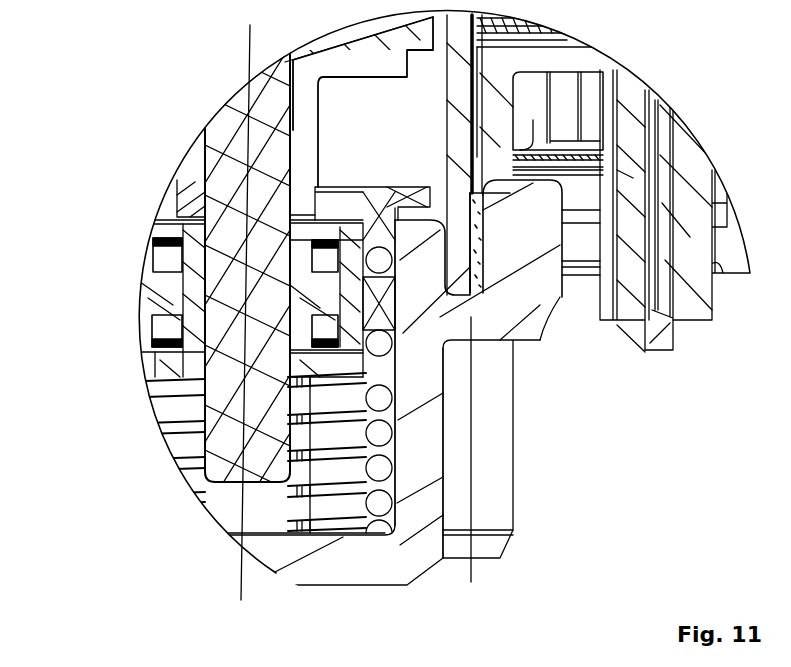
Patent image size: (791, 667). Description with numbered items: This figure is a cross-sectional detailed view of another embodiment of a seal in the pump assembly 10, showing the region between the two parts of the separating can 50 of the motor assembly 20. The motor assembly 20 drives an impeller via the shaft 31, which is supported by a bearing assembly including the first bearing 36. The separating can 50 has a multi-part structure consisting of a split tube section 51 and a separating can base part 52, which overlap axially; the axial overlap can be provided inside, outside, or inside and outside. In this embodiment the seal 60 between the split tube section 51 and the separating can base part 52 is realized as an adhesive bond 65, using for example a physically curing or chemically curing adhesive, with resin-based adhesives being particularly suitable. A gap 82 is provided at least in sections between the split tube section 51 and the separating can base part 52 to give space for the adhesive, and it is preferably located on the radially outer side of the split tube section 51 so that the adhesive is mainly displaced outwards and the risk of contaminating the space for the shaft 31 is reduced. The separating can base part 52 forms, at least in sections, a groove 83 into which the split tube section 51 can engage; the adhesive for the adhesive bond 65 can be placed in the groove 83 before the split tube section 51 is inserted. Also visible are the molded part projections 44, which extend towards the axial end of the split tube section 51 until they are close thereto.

The pump assembly 10 is at (85, 68).
The motor assembly 20 is at (212, 52).
The shaft 31 is at (228, 150).
The first bearing 36 is at (150, 308).
The molded part projections 44 is at (490, 117).
The separating can 50 is at (238, 560).
The split tube section 51 is at (457, 37).
The separating can base part 52 is at (430, 565).
The seal 60 is at (483, 250).
The adhesive bond 65 is at (483, 237).
The gap 82 is at (490, 235).
The groove 83 is at (453, 313).